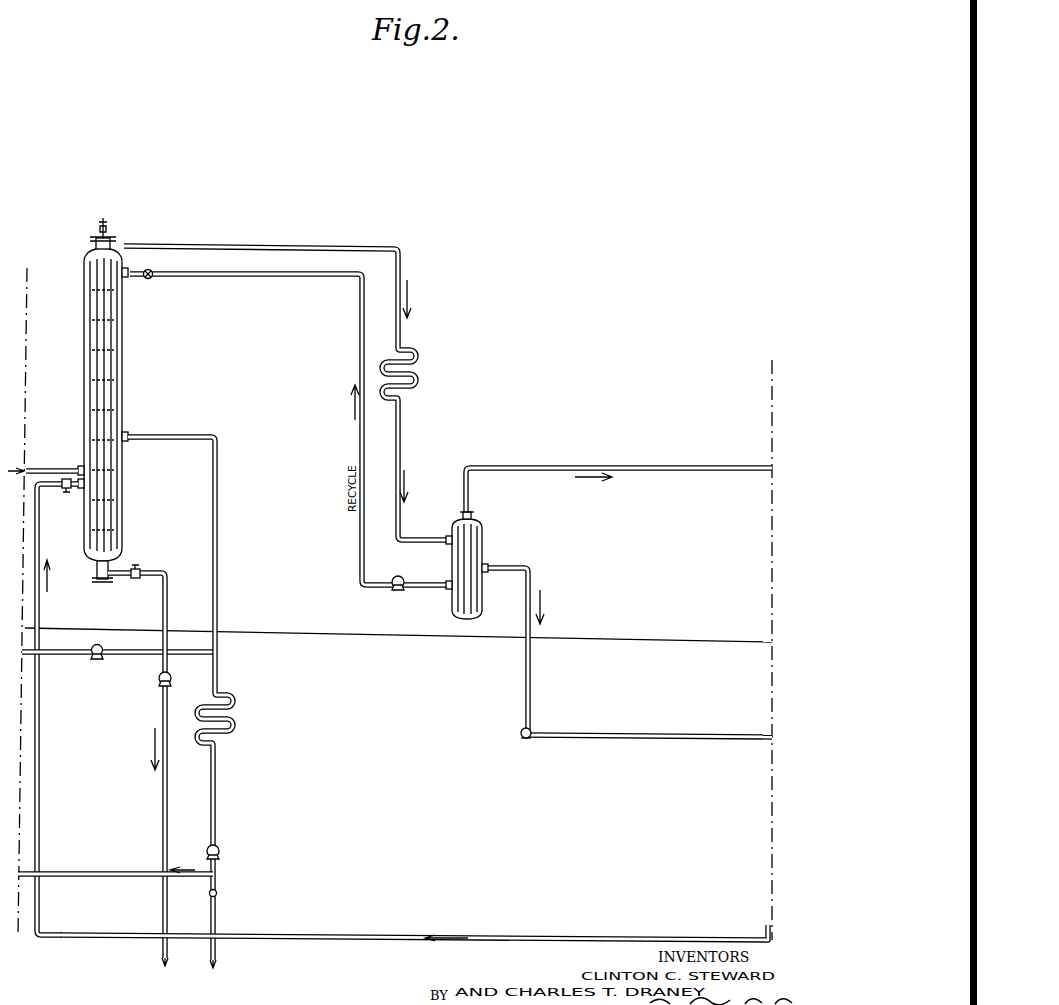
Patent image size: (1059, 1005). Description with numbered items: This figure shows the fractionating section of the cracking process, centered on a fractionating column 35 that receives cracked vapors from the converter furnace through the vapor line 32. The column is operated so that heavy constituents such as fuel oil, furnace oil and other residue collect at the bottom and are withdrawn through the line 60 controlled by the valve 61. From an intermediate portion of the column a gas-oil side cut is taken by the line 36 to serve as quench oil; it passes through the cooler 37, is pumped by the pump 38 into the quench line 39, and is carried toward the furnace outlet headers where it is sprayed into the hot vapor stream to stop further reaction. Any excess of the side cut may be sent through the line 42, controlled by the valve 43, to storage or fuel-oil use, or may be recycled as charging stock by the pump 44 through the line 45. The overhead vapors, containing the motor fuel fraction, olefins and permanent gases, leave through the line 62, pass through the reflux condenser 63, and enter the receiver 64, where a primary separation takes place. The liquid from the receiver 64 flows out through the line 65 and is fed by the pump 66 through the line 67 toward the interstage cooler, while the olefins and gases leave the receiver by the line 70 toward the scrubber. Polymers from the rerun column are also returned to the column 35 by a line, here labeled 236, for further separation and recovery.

The line 32 is at (30, 478).
The fractionating column 35 is at (123, 362).
The line 36 is at (217, 530).
The cooler 37 is at (231, 718).
The pump 38 is at (220, 851).
The quench line 39 is at (65, 878).
The line 42 is at (216, 947).
The valve 43 is at (217, 893).
The pump 44 is at (97, 660).
The line 45 is at (60, 655).
The line 60 is at (168, 575).
The valve 61 is at (136, 566).
The line 62 is at (256, 250).
The reflux condenser 63 is at (412, 377).
The receiver 64 is at (453, 556).
The line 65 is at (532, 582).
The pump 66 is at (528, 739).
The line 67 is at (673, 740).
The line 70 is at (698, 470).
The polymers from rerun column line 236 is at (586, 944).